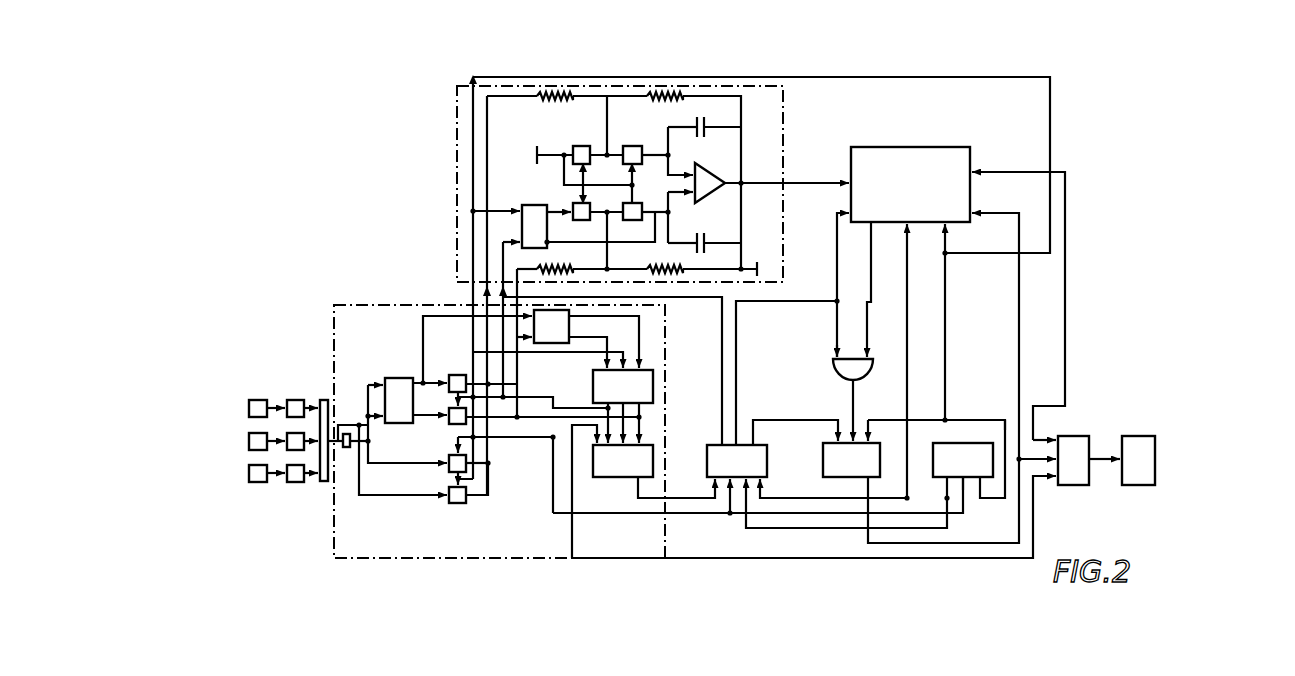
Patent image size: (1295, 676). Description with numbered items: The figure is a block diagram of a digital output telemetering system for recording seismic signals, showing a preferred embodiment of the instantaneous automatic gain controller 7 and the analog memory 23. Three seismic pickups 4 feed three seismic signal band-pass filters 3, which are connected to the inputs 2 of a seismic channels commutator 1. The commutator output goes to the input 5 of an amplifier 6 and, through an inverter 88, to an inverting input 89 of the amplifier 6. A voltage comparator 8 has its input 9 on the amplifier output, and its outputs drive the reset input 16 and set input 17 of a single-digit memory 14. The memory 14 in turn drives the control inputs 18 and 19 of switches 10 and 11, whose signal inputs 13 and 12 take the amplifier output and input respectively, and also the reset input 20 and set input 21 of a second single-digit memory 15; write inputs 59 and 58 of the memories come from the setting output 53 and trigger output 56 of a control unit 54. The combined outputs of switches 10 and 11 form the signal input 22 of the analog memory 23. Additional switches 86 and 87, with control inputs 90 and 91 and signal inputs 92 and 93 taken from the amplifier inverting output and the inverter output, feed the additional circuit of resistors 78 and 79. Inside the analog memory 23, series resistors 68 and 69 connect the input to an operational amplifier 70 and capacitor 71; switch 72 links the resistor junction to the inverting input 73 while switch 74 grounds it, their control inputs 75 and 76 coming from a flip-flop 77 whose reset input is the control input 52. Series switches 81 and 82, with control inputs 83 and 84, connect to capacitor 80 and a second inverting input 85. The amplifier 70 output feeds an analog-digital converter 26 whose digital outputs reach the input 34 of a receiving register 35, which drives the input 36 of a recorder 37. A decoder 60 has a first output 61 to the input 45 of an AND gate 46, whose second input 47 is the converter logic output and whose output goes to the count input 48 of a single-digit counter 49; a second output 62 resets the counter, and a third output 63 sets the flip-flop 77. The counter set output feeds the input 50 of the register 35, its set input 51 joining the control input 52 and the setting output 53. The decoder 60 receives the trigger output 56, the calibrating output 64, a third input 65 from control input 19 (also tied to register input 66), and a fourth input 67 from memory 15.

The seismic channels commutator 1 is at (325, 400).
The inputs 2 is at (321, 401).
The seismic signal band-pass filters 3 is at (294, 400).
The seismic pickups 4 is at (249, 405).
The input 5 is at (374, 385).
The amplifier 6 is at (385, 382).
The instantaneous automatic gain controller 7 is at (410, 615).
The voltage comparator 8 is at (532, 318).
The input 9 is at (520, 335).
The switch 10 is at (505, 384).
The switch 11 is at (448, 498).
The signal input 12 is at (453, 503).
The signal input 13 is at (424, 382).
The single-digit memory 14 is at (623, 406).
The single-digit memory 15 is at (630, 477).
The reset input 16 is at (605, 370).
The set input 17 is at (645, 370).
The control input 18 is at (455, 375).
The control input 19 is at (470, 470).
The reset input 20 is at (603, 440).
The set input 21 is at (641, 425).
The signal input 22 is at (490, 295).
The analog memory 23 is at (787, 112).
The analog-digital converter 26 is at (884, 150).
The input 34 is at (1058, 435).
The receiving register 35 is at (1092, 485).
The input 36 is at (1118, 470).
The recorder 37 is at (1135, 436).
The input 45 is at (836, 357).
The AND gate 46 is at (840, 373).
The second input 47 is at (868, 357).
The count input 48 is at (855, 430).
The single-digit counter 49 is at (848, 478).
The input 50 is at (1052, 480).
The set input 51 is at (872, 440).
The control input 52 is at (470, 80).
The setting output 53 is at (982, 480).
The control unit 54 is at (945, 478).
The trigger output 56 is at (948, 480).
The write input 58 is at (645, 425).
The write input 59 is at (643, 360).
The decoder 60 is at (740, 478).
The first output 61 is at (740, 440).
The second output 62 is at (757, 440).
The third output 63 is at (723, 447).
The calibrating output 64 is at (964, 480).
The third input 65 is at (733, 515).
The input 66 is at (1058, 485).
The fourth input 67 is at (718, 495).
The resistor 68 is at (673, 96).
The resistor 69 is at (552, 96).
The operational amplifier 70 is at (730, 183).
The capacitor 71 is at (705, 130).
The switch 72 is at (608, 152).
The inverting input 73 is at (700, 172).
The switch 74 is at (618, 40).
The control input 75 is at (625, 40).
The control input 76 is at (588, 146).
The flip-flop 77 is at (418, 222).
The resistor 78 is at (655, 270).
The resistor 79 is at (562, 270).
The capacitor 80 is at (705, 245).
The switch 81 is at (644, 215).
The switch 82 is at (547, 243).
The control input 83 is at (596, 203).
The control input 84 is at (570, 192).
The inverting input 85 is at (700, 193).
The additional switch 86 is at (454, 425).
The additional switch 87 is at (451, 472).
The inverter 88 is at (347, 448).
The inverting input 89 is at (369, 441).
The control input 90 is at (519, 417).
The control input 91 is at (470, 441).
The signal input 92 is at (388, 422).
The signal input 93 is at (447, 463).